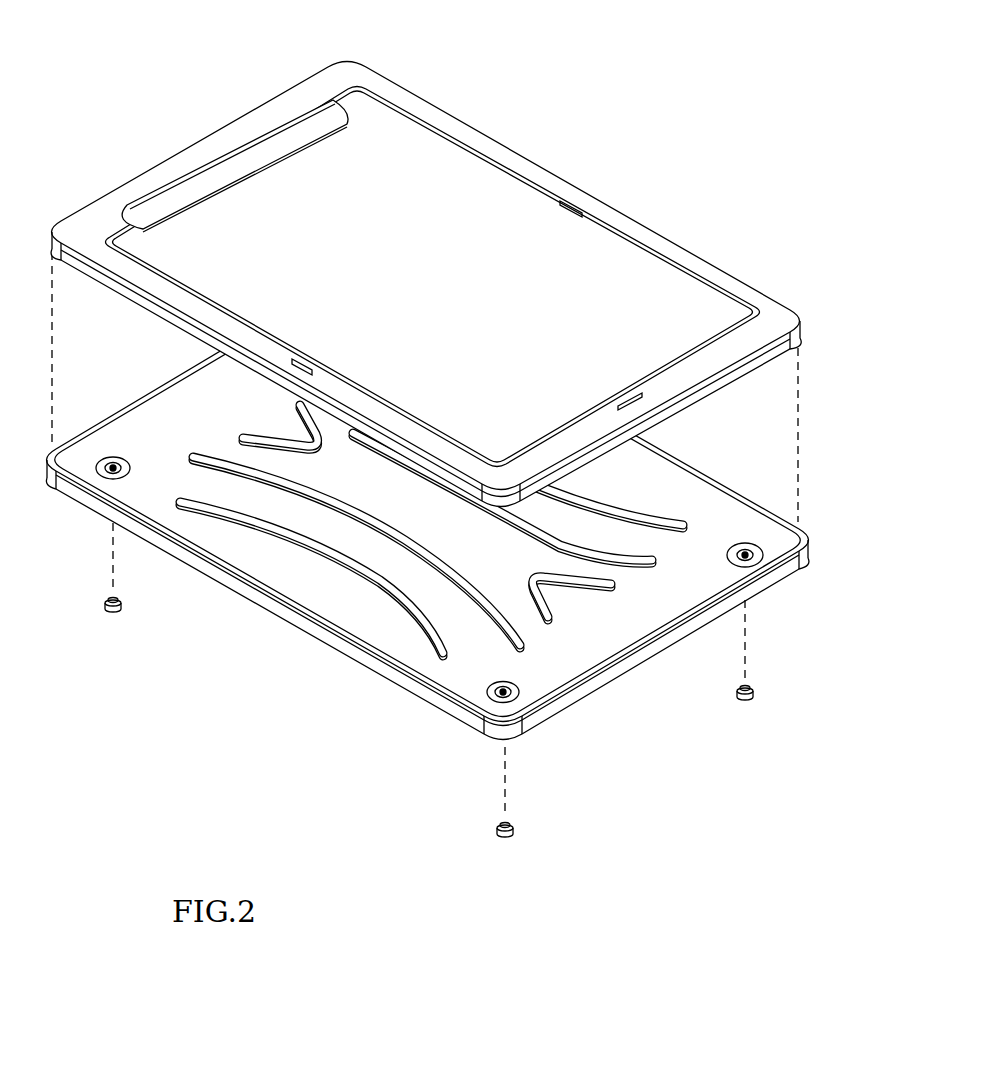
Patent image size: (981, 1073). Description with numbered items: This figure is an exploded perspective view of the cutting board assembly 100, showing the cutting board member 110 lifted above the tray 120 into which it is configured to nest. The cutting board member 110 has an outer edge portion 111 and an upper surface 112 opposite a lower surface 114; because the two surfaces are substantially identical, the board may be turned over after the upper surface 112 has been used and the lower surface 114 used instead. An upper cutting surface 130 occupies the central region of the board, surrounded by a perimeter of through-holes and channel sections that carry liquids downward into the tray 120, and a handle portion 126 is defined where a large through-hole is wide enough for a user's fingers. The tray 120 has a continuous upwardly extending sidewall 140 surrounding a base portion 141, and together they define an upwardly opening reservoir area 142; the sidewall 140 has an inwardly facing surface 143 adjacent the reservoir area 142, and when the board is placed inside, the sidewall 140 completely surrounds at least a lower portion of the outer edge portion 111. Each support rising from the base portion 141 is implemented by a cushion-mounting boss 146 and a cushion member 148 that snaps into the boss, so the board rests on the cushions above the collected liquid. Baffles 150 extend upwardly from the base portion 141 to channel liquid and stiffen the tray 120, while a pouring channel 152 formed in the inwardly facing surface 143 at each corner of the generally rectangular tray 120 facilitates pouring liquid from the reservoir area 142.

The cutting board assembly 100 is at (447, 429).
The cutting board member 110 is at (425, 259).
The outer edge portion 111 is at (768, 353).
The upper surface 112 is at (313, 177).
The lower surface 114 is at (90, 270).
The tray 120 is at (447, 513).
The handle portion 126 is at (217, 140).
The upper cutting surface 130 is at (737, 320).
The sidewall 140 is at (177, 372).
The base portion 141 is at (273, 555).
The reservoir area 142 is at (357, 603).
The inwardly facing surface 143 is at (123, 417).
The cushion-mounting boss 146 is at (93, 477).
The cushion member 148 is at (113, 614).
The baffle 150 is at (643, 560).
The pouring channel 152 is at (807, 537).